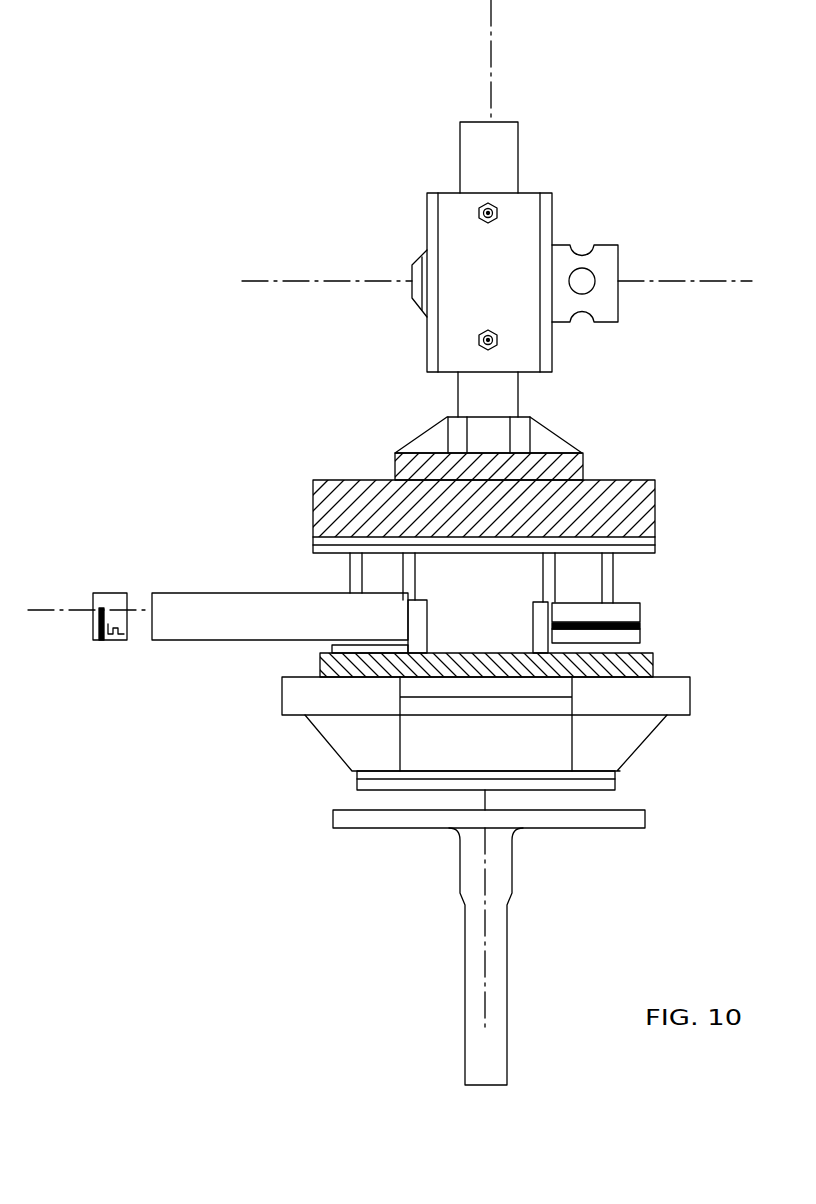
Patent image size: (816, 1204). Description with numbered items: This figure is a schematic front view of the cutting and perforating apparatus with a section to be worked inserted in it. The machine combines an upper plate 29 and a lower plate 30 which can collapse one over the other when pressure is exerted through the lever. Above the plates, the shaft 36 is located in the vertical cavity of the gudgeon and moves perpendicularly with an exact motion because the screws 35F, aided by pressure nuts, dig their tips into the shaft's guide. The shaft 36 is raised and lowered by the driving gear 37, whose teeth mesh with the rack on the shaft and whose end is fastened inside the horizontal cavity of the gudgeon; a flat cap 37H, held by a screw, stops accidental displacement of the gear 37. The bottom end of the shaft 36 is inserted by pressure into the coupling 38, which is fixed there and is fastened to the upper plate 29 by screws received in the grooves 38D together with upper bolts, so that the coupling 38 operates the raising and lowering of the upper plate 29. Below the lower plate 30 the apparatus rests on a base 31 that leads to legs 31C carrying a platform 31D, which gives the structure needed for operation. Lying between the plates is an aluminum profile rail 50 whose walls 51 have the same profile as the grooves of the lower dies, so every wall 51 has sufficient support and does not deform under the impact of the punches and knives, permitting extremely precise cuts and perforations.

The upper plate 29 is at (637, 508).
The lower plate 30 is at (633, 670).
The base member 31 is at (613, 743).
The legs 31C is at (492, 970).
The platform 31D is at (628, 826).
The screws 35F is at (498, 340).
The shaft 36 is at (503, 162).
The driving gear 37 is at (607, 253).
The flat cap 37H is at (418, 290).
The coupling 38 is at (570, 470).
The grooves 38D is at (513, 437).
The aluminum profile rails 50 is at (117, 601).
The walls 51 is at (100, 618).